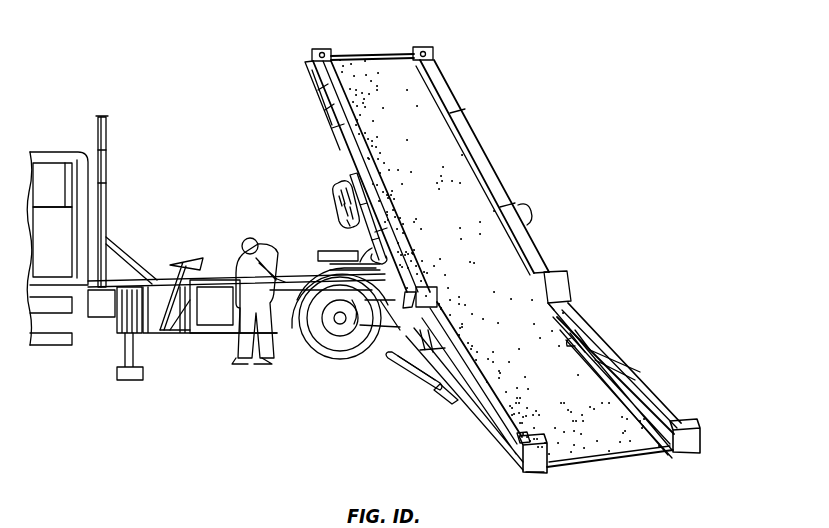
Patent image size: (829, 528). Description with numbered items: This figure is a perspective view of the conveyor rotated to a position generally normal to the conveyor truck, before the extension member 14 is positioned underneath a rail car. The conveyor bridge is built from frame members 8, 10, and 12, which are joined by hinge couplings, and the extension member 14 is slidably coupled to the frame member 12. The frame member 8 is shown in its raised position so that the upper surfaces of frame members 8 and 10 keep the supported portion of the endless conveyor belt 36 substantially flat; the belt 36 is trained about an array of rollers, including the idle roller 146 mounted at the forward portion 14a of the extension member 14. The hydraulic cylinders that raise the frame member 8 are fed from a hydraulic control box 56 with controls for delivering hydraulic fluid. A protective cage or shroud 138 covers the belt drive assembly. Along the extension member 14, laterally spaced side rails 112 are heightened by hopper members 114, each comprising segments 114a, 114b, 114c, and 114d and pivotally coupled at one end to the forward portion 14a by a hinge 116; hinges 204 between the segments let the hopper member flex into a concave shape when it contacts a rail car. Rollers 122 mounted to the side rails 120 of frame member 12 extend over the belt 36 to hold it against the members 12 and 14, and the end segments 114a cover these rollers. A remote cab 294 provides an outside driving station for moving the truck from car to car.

The frame member 8 is at (446, 71).
The endless conveyor belt 36 is at (447, 148).
The frame member 10 is at (505, 178).
The frame member 12 is at (556, 254).
The protective cage or shroud 138 is at (338, 205).
The segment 114a is at (395, 338).
The segment 114b is at (574, 303).
The segment 114c is at (627, 352).
The segment 114d is at (687, 403).
The hopper member 114 is at (460, 413).
The roller 122 is at (580, 338).
The hinge 204 is at (607, 338).
The hinge 116 is at (512, 448).
The extension member 14 is at (483, 443).
The forward portion 14a is at (525, 470).
The side rail 112 is at (477, 430).
The idle roller 146 is at (403, 363).
The side rail 120 is at (437, 387).
The hydraulic control box 56 is at (292, 328).
The remote cab 294 is at (218, 340).